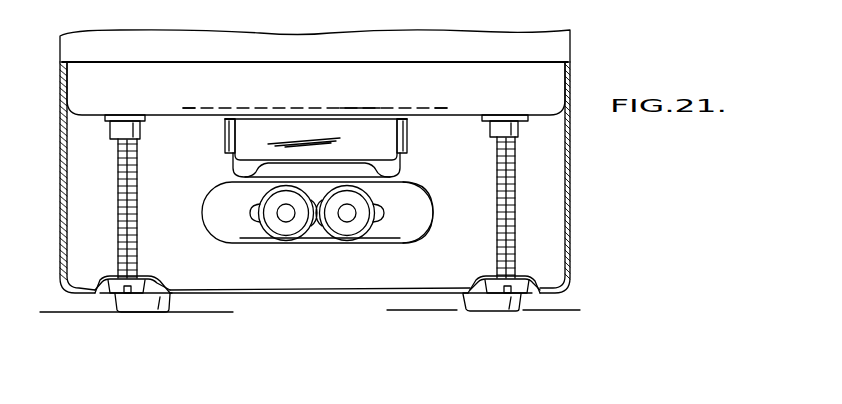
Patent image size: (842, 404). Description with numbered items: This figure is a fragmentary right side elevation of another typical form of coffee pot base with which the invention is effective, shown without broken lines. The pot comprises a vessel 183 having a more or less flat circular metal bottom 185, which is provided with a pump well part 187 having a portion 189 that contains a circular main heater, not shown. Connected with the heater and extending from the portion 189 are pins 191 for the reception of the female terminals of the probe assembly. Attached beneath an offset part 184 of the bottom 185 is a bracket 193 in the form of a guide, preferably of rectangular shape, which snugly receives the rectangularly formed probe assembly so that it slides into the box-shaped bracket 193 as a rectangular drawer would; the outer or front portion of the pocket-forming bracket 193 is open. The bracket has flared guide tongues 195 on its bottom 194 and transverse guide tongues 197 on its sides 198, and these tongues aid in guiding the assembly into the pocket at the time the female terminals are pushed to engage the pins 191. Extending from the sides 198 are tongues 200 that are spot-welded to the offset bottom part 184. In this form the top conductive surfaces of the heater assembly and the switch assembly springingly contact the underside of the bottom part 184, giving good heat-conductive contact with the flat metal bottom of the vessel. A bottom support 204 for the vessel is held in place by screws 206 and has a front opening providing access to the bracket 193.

The vessel 183 is at (203, 45).
The offset part of the bottom 184 is at (318, 106).
The bottom 185 is at (88, 118).
The pump well part 187 is at (266, 175).
The portion containing main heater 189 is at (417, 220).
The pins 191 is at (289, 216).
The bracket 193 is at (354, 107).
The bottom of bracket 194 is at (349, 158).
The flared guide tongues 195 is at (237, 169).
The transverse guide tongues 197 is at (225, 135).
The sides of bracket 198 is at (242, 130).
The tongues 200 is at (203, 107).
The bottom support 204 is at (572, 140).
The screws 206 is at (118, 196).